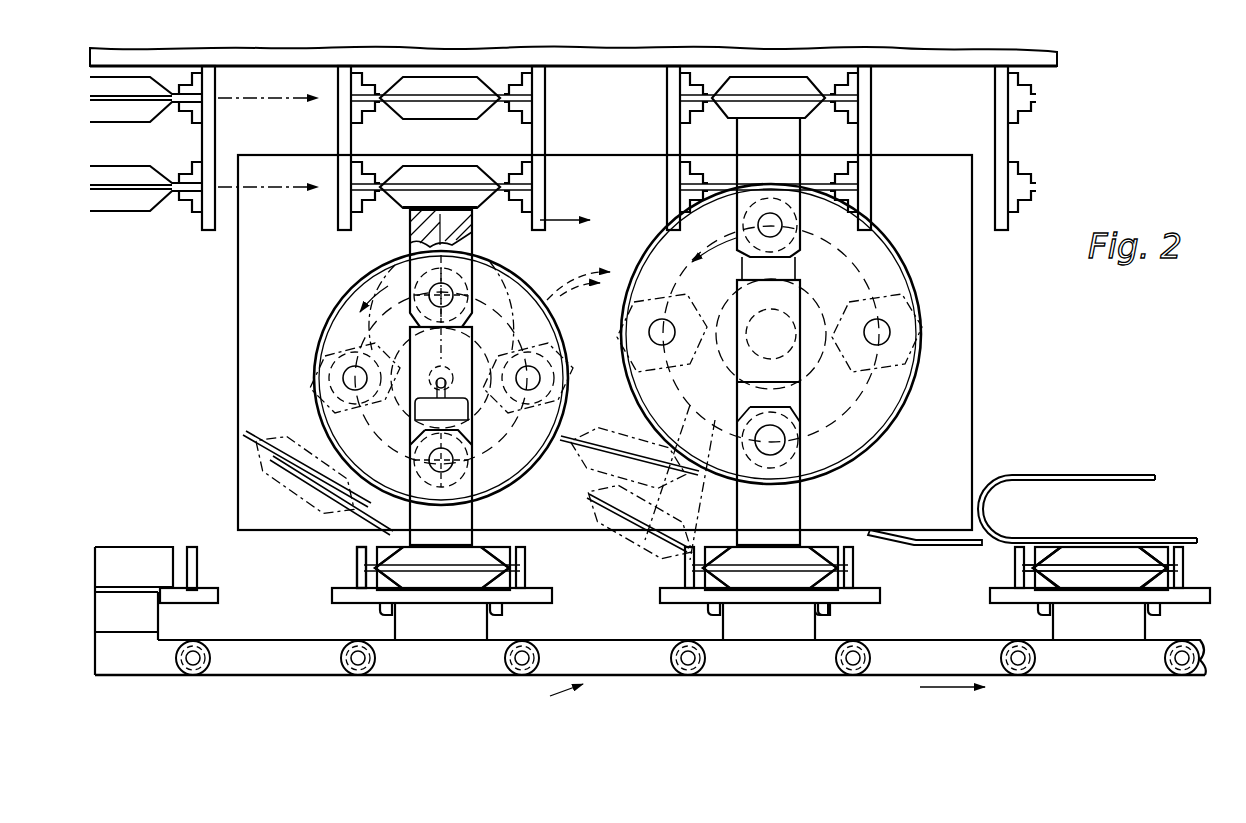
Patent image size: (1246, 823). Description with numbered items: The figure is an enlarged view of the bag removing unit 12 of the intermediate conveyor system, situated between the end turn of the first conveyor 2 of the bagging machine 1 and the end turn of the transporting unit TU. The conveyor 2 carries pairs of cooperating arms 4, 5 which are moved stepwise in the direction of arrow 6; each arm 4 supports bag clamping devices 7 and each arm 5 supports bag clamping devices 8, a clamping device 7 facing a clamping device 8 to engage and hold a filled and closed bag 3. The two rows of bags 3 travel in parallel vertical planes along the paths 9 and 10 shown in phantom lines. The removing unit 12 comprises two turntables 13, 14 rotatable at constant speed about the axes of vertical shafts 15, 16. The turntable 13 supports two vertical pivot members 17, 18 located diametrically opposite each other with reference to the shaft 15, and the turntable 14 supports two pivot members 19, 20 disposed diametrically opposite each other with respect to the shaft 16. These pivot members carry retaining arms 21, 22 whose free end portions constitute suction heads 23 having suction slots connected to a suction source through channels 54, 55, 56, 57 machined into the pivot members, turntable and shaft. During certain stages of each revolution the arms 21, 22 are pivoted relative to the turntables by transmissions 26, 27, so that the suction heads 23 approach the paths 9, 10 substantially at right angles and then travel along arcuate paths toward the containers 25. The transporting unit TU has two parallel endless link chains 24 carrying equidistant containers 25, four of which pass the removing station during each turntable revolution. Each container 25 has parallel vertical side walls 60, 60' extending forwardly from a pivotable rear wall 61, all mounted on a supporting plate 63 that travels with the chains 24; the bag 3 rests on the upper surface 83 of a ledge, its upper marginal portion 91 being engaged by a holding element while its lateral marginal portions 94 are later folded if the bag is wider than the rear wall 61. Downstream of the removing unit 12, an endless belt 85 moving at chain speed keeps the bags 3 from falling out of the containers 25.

The bagging machine 1 is at (1050, 55).
The first conveyor 2 is at (1030, 135).
The bag 3 is at (437, 113).
The arm 4 is at (540, 135).
The arm 5 is at (338, 128).
The arrow 6 is at (565, 220).
The bag clamping device 7 is at (515, 97).
The bag clamping device 8 is at (358, 88).
The path 9 is at (268, 190).
The path 10 is at (237, 104).
The bag removing unit 12 is at (945, 410).
The turntable 13 is at (320, 350).
The turntable 14 is at (893, 285).
The vertical shaft 15 is at (385, 428).
The vertical shaft 16 is at (805, 305).
The pivot member 17 is at (410, 257).
The pivot member 18 is at (441, 497).
The pivot member 19 is at (790, 222).
The pivot member 20 is at (768, 448).
The retaining arm 21 is at (472, 240).
The retaining arm 22 is at (782, 190).
The suction head 23 is at (748, 118).
The endless link chain 24 is at (957, 648).
The container 25 is at (232, 600).
The transmission 26 is at (355, 285).
The transmission 27 is at (923, 347).
The channel 54 is at (410, 223).
The channel 55 is at (415, 310).
The channel 56 is at (365, 340).
The channel 57 is at (403, 306).
The side wall 60 is at (696, 574).
The side wall 60' is at (653, 569).
The rear wall 61 is at (828, 612).
The supporting plate 63 is at (735, 625).
The upper surface 83 is at (1050, 550).
The endless belt 85 is at (1028, 540).
The upper marginal portion 91 is at (1100, 572).
The lateral marginal portion 94 is at (1175, 565).
The transporting unit TU is at (543, 695).